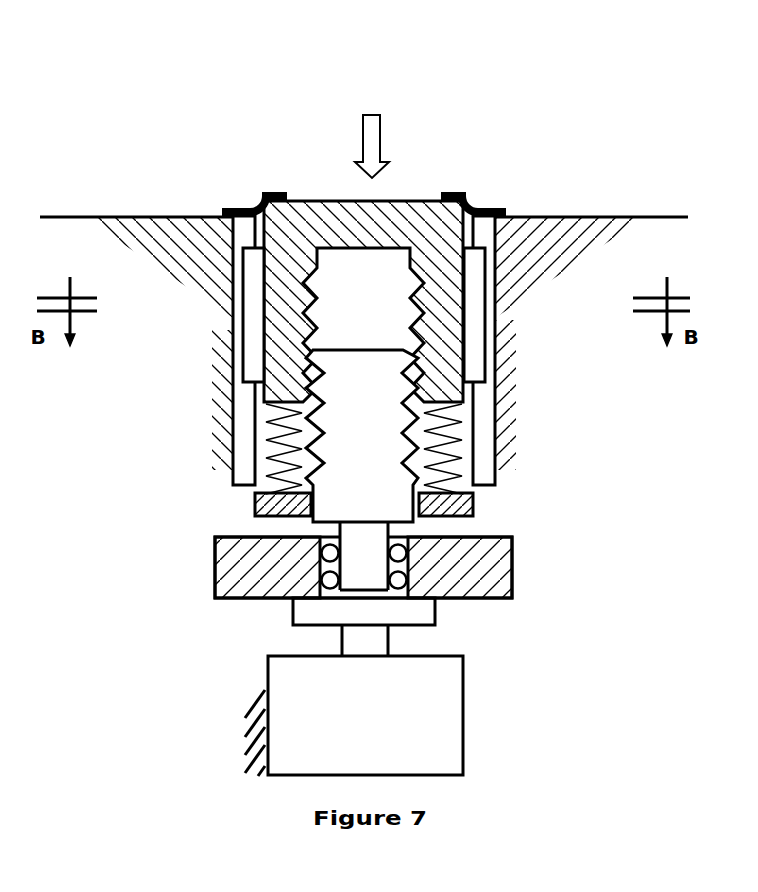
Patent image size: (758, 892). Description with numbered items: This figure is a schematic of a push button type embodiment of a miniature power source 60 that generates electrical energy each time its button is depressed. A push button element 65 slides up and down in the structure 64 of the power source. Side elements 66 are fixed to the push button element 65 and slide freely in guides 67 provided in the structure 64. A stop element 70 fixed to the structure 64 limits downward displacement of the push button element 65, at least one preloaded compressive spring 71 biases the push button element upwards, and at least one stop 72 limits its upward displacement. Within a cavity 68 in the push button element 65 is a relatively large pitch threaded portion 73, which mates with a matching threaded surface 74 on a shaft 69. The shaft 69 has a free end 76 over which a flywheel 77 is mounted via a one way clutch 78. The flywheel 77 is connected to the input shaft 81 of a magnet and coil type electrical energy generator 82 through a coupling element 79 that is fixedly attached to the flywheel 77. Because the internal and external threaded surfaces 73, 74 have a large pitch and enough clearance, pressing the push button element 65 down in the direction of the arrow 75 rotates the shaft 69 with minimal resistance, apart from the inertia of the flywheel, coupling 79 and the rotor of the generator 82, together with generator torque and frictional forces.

The power source 60 is at (622, 165).
The structure 64 is at (222, 288).
The push button element 65 is at (348, 200).
The side elements 66 is at (253, 340).
The guides 67 is at (245, 463).
The cavity 68 is at (373, 283).
The shaft 69 is at (357, 428).
The stop element 70 is at (448, 505).
The preloaded compressive spring 71 is at (407, 428).
The stop 72 is at (263, 185).
The threaded portion 73 is at (221, 213).
The threaded surface 74 is at (472, 488).
The arrow 75 is at (372, 133).
The free end 76 is at (356, 569).
The flywheel 77 is at (262, 577).
The one way clutch 78 is at (400, 562).
The coupling element 79 is at (399, 610).
The input shaft 81 is at (364, 637).
The electrical energy generator 82 is at (427, 720).